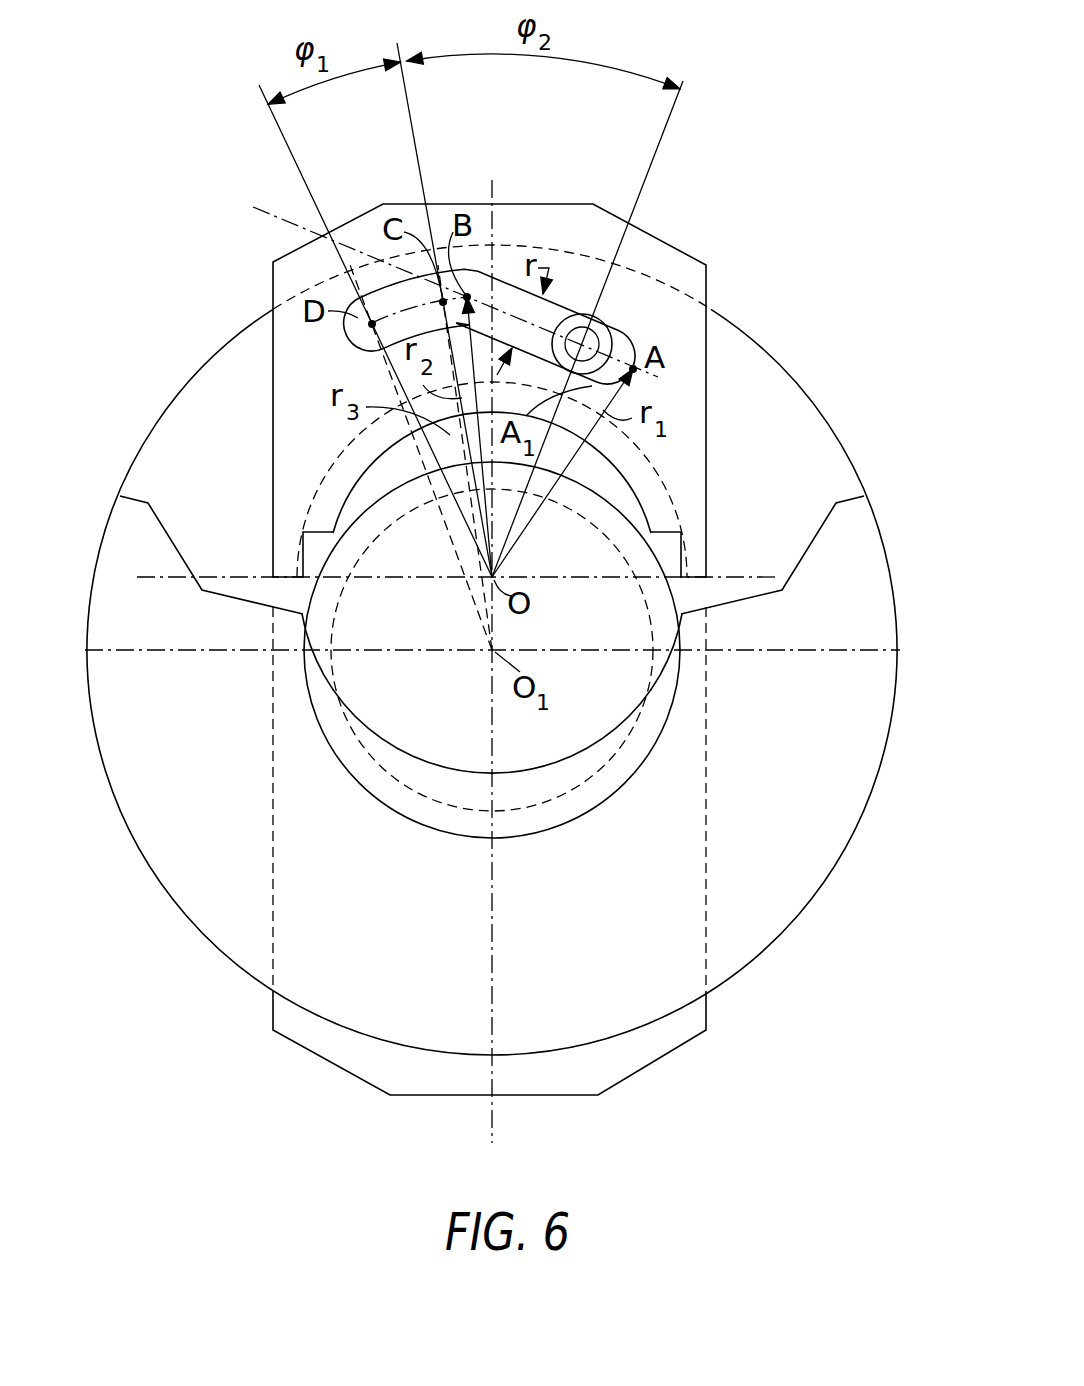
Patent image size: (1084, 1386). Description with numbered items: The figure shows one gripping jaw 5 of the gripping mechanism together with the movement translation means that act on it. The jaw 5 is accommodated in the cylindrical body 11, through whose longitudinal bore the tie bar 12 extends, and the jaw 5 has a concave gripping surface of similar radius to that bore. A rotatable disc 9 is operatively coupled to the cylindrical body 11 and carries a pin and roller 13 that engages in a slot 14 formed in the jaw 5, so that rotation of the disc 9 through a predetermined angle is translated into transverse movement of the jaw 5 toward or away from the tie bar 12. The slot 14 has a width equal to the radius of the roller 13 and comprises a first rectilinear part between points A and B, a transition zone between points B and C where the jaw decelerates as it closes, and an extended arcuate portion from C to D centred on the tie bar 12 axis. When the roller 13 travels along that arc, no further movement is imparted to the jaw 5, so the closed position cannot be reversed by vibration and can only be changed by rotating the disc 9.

The gripping jaw 5 is at (687, 342).
The rotatable disc 9 is at (790, 455).
The cylindrical body 11 is at (822, 603).
The tie bar 12 is at (583, 733).
The pin and roller 13 is at (581, 312).
The slot 14 is at (632, 352).